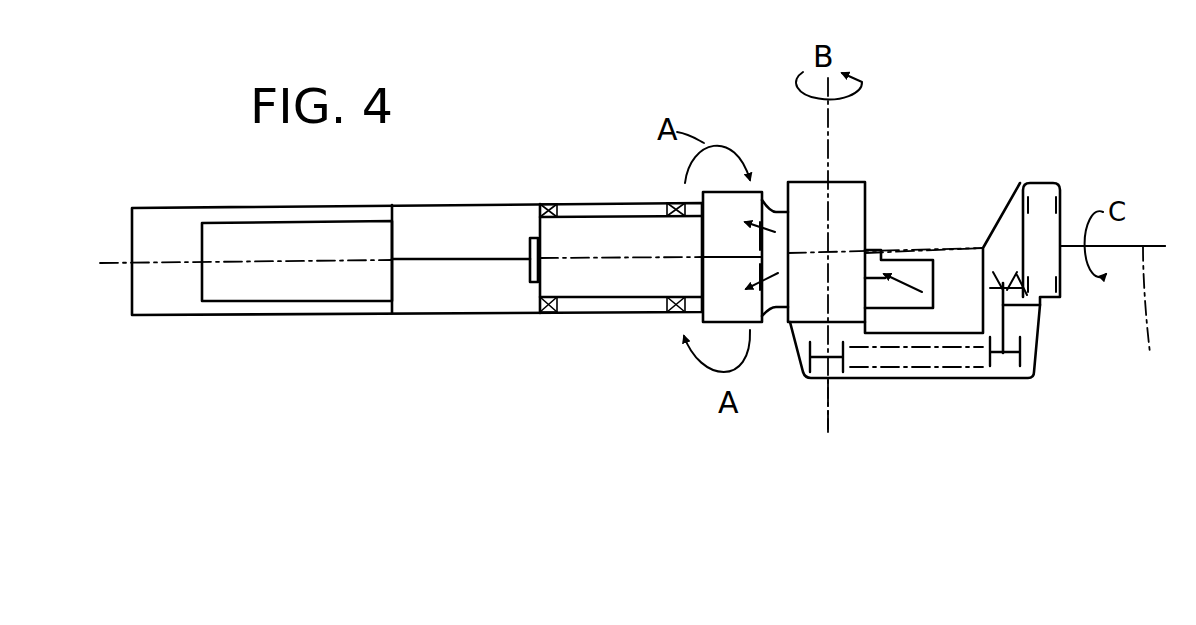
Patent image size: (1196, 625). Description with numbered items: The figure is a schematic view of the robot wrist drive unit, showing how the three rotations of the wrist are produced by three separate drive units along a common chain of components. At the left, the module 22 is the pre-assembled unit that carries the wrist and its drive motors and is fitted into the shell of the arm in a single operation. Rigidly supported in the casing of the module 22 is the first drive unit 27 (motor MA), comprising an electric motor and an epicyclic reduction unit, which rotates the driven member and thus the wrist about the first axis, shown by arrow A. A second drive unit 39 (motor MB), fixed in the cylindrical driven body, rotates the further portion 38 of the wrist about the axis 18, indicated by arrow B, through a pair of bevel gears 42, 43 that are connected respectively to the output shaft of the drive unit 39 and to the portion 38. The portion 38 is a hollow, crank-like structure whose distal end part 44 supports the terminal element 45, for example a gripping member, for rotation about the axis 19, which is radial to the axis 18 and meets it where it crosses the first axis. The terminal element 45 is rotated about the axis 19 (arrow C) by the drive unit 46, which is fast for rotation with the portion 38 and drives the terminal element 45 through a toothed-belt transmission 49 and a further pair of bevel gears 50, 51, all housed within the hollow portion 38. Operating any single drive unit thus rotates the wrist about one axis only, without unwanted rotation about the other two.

The axis 18 is at (828, 412).
The axis 19 is at (1158, 315).
The module 22 is at (183, 207).
The first drive unit 27 is at (322, 276).
The further portion of the wrist 38 is at (890, 384).
The drive unit 39 is at (592, 274).
The bevel gear 42 is at (765, 184).
The bevel gear 43 is at (936, 256).
The distal end part 44 is at (1056, 178).
The terminal element 45 is at (1063, 225).
The drive unit 46 is at (858, 180).
The toothed-belt transmission 49 is at (932, 358).
The bevel gear 50 is at (1006, 292).
The bevel gear 51 is at (1020, 206).